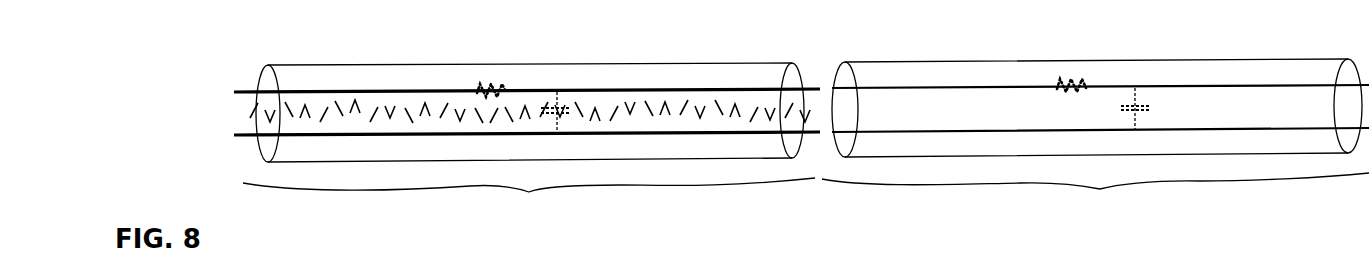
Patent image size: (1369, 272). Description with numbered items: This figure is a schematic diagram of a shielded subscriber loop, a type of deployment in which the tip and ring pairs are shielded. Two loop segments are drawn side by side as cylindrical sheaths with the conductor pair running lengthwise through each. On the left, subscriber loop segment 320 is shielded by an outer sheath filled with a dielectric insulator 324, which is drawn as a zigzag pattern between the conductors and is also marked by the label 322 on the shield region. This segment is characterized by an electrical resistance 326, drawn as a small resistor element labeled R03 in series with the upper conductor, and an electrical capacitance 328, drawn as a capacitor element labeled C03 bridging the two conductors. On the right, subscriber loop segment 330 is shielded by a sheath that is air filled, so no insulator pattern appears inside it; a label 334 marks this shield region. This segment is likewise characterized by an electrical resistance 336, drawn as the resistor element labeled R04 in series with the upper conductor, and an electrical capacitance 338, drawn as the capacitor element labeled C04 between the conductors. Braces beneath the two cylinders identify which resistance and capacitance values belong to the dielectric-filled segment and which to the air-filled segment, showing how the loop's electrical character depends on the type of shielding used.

The subscriber loop segment 320 is at (529, 144).
The conductor of first cable segment 322 is at (688, 63).
The dielectric insulator 324 is at (675, 108).
The electrical resistance 326 is at (482, 87).
The electrical capacitance 328 is at (557, 123).
The subscriber loop segment 330 is at (1095, 137).
The conductor of second cable segment 334 is at (945, 62).
The electrical resistance 336 is at (1061, 84).
The electrical capacitance 338 is at (1133, 118).
The resistor R03 is at (535, 75).
The capacitor C03 is at (590, 119).
The resistor R04 is at (1108, 73).
The capacitor C04 is at (1176, 119).